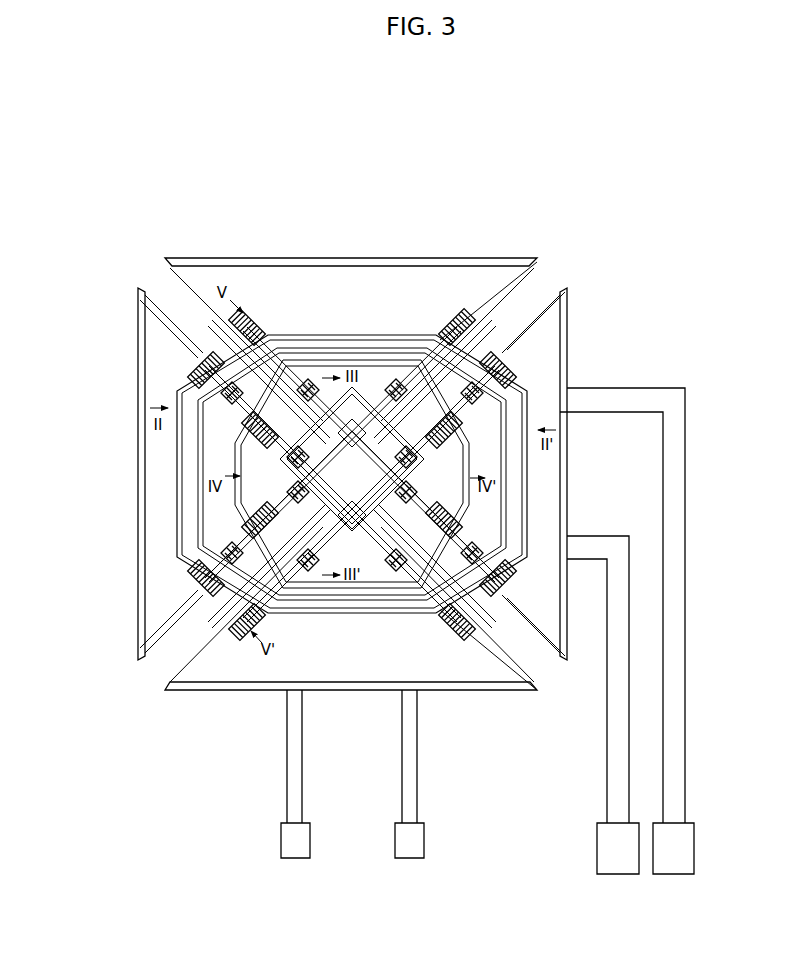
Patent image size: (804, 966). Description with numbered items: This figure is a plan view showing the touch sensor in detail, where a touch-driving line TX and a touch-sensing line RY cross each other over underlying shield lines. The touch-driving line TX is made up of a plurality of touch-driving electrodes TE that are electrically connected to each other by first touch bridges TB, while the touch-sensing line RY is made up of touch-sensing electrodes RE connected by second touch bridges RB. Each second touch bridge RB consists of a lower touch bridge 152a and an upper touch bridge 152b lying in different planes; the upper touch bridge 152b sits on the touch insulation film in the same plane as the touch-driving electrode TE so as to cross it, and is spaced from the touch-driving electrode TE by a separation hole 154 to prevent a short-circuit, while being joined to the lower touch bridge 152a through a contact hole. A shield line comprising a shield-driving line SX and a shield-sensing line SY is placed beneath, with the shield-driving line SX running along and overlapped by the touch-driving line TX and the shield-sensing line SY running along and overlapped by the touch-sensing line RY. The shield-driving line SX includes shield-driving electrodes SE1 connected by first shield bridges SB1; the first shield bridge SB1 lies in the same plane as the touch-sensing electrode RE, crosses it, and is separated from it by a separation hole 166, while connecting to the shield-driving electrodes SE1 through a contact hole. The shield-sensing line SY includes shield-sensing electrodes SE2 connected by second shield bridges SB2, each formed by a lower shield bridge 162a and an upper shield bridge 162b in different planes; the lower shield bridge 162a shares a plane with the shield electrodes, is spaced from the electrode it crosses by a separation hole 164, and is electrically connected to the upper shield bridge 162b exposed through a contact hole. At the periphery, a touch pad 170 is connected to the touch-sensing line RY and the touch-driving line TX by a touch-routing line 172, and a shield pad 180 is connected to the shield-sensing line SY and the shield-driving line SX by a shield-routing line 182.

The touch-driving line TX is at (168, 205).
The touch-driving electrode TE is at (152, 290).
The first touch bridge TB is at (244, 318).
The touch-sensing line RY is at (326, 205).
The second touch bridge RB is at (304, 380).
The touch-sensing electrode RE is at (352, 336).
The shield-sensing line SY is at (453, 205).
The second shield bridge SB2 is at (456, 318).
The shield-sensing electrode SE2 is at (560, 290).
The shield-driving line SX is at (462, 758).
The first shield bridge SB1 is at (412, 690).
The shield-driving electrode SE1 is at (540, 692).
The lower touch bridge 152a is at (292, 600).
The upper touch bridge 152b is at (203, 517).
The separation hole 154 is at (237, 530).
The lower shield bridge 162a is at (182, 462).
The upper shield bridge 162b is at (242, 636).
The separation hole 164 is at (177, 500).
The separation hole 166 is at (305, 470).
The touch pad 170 is at (694, 848).
The touch-routing line 172 is at (686, 755).
The shield pad 180 is at (597, 848).
The shield-routing line 182 is at (607, 789).